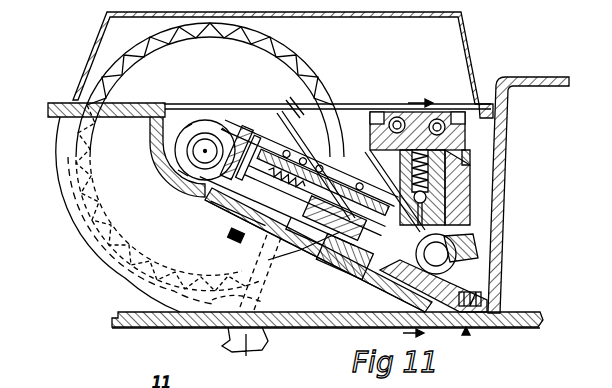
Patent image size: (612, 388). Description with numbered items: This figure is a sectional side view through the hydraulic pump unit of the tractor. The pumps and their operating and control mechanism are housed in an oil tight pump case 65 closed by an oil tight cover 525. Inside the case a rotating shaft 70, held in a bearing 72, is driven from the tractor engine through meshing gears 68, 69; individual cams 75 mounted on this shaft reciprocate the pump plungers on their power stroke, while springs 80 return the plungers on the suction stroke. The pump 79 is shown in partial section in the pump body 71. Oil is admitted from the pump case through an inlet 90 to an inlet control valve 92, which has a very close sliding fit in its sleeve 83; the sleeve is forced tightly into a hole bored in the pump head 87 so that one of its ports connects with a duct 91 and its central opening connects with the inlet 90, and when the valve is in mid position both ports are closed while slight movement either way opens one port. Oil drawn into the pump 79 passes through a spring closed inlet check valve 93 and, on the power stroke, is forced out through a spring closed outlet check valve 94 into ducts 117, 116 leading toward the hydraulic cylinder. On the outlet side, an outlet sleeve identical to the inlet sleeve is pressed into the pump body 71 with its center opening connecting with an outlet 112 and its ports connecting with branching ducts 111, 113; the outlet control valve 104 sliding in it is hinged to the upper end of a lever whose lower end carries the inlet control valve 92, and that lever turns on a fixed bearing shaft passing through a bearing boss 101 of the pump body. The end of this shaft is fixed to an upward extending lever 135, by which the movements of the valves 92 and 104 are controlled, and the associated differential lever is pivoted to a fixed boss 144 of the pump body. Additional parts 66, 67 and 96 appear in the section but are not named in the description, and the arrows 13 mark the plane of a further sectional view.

The oil tight cover 525 is at (100, 37).
The gear 69 is at (300, 62).
The spring 80 is at (200, 215).
The oil tight pump case 65 is at (506, 150).
The gear 68 is at (268, 340).
The bearing 72 is at (176, 138).
The rotating shaft 70 is at (190, 149).
The upward extending lever 135 is at (299, 187).
The cam 75 is at (236, 152).
The branching duct 111 is at (315, 179).
The outlet control valve 104 is at (335, 218).
The lever 66 is at (327, 248).
The pin 67 is at (232, 225).
The fixed boss 144 is at (290, 106).
The outlet 112 is at (316, 165).
The bearing boss 101 is at (356, 272).
The block 96 is at (393, 112).
The duct 116 is at (440, 112).
The duct 117 is at (450, 118).
The branching duct 113 is at (464, 153).
The spring closed outlet check valve 94 is at (450, 170).
The pump head 87 is at (472, 203).
The spring closed inlet check valve 93 is at (460, 235).
The duct 91 is at (480, 250).
The sleeve 83 is at (488, 272).
The inlet control valve 92 is at (470, 291).
The inlet 90 is at (412, 298).
The pump 79 is at (247, 271).
The pump body 71 is at (315, 283).
The section line 13 is at (436, 216).